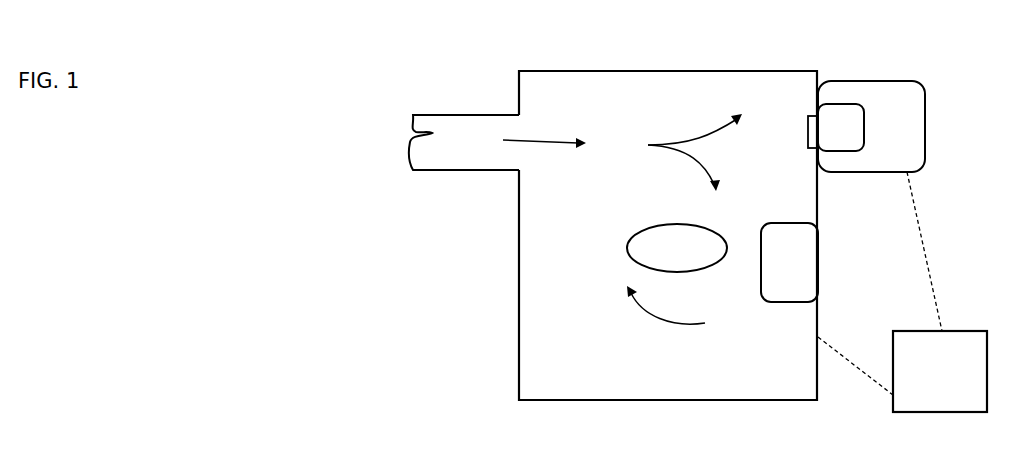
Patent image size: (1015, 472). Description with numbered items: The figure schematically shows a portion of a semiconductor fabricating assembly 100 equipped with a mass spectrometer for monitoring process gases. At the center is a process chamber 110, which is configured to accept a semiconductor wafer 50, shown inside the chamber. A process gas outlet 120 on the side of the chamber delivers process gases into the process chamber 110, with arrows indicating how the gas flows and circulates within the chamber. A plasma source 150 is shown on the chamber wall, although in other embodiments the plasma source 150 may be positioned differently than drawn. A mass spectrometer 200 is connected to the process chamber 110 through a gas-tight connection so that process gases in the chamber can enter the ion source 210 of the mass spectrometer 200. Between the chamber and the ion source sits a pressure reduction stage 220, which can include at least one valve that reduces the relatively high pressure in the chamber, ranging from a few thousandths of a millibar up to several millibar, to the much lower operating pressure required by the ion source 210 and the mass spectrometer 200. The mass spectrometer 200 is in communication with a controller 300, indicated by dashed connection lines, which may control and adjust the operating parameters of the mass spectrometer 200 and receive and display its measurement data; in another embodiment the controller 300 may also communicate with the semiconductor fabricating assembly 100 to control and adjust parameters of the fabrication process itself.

The semiconductor fabricating assembly 100 is at (405, 48).
The process chamber 110 is at (613, 235).
The process gas outlet 120 is at (497, 142).
The semiconductor wafer 50 is at (677, 248).
The plasma source 150 is at (789, 262).
The mass spectrometer 200 is at (833, 92).
The ion source 210 is at (841, 127).
The pressure reduction stage 220 is at (808, 133).
The controller 300 is at (902, 292).